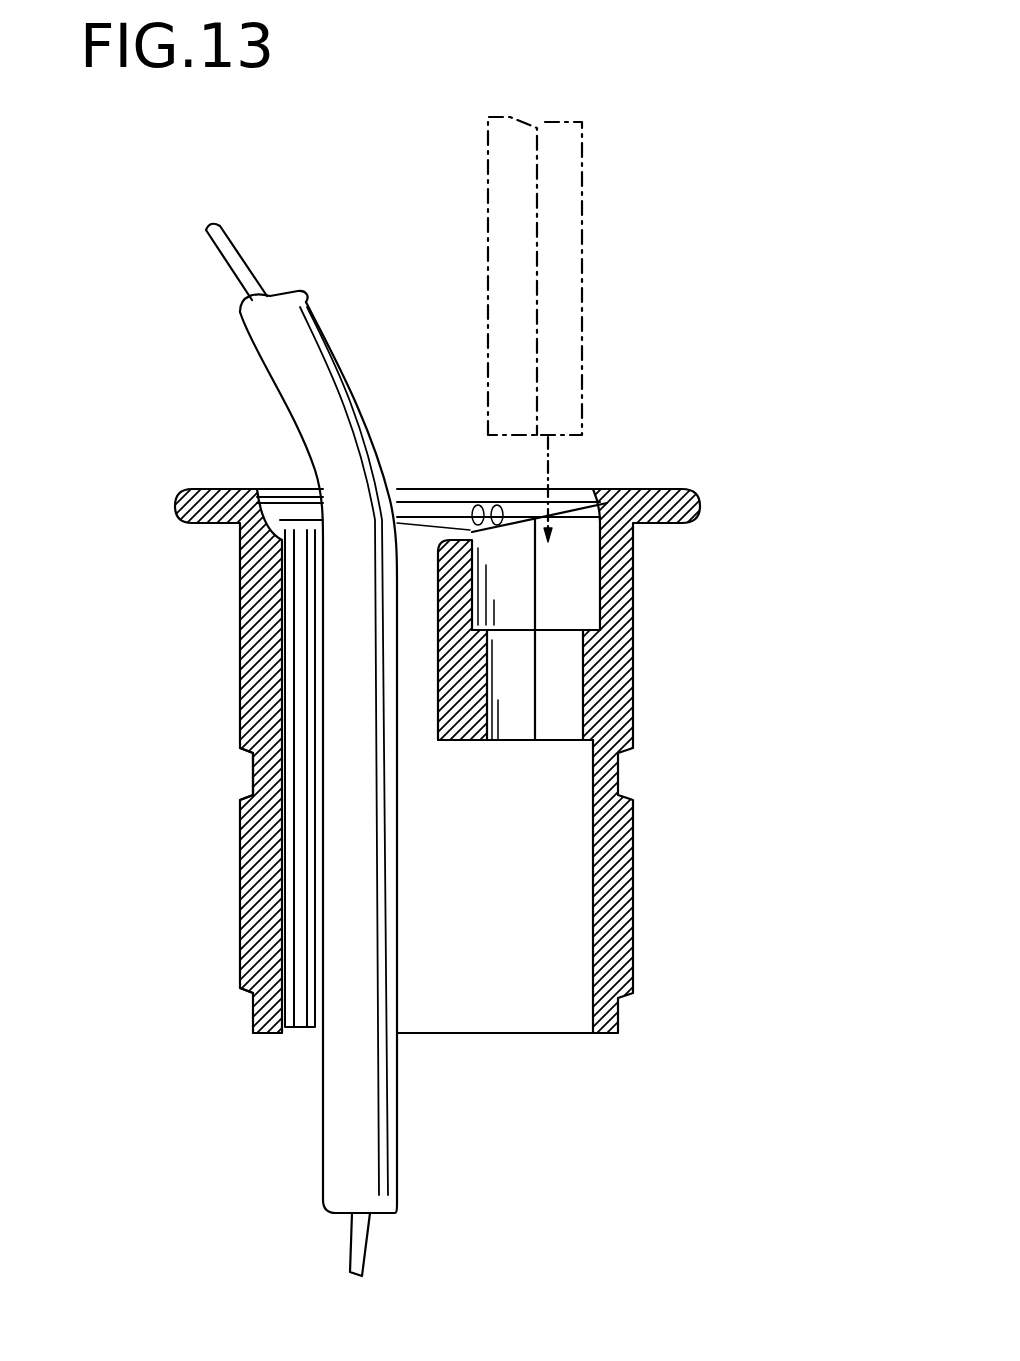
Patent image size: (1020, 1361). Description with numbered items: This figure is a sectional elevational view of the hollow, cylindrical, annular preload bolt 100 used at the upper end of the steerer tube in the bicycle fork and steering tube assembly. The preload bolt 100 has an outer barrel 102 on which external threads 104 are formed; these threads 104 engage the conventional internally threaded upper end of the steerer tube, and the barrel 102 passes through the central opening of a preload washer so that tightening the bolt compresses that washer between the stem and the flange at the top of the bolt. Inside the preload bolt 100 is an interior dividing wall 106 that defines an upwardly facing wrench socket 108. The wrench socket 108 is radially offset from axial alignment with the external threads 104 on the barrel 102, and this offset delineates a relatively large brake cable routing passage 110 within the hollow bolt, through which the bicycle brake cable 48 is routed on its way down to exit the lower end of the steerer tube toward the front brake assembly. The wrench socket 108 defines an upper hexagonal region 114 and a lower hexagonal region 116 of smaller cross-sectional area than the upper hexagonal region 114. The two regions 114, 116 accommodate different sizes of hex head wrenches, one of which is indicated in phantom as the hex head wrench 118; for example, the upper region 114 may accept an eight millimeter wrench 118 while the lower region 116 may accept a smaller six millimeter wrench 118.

The bicycle brake cable 48 is at (297, 372).
The preload bolt 100 is at (676, 770).
The outer barrel 102 is at (273, 912).
The external threads 104 is at (237, 856).
The interior dividing wall 106 is at (437, 684).
The wrench socket 108 is at (607, 453).
The brake cable routing passage 110 is at (310, 690).
The upper hexagonal region 114 is at (577, 588).
The lower hexagonal region 116 is at (565, 682).
The hex head wrench 118 is at (567, 272).